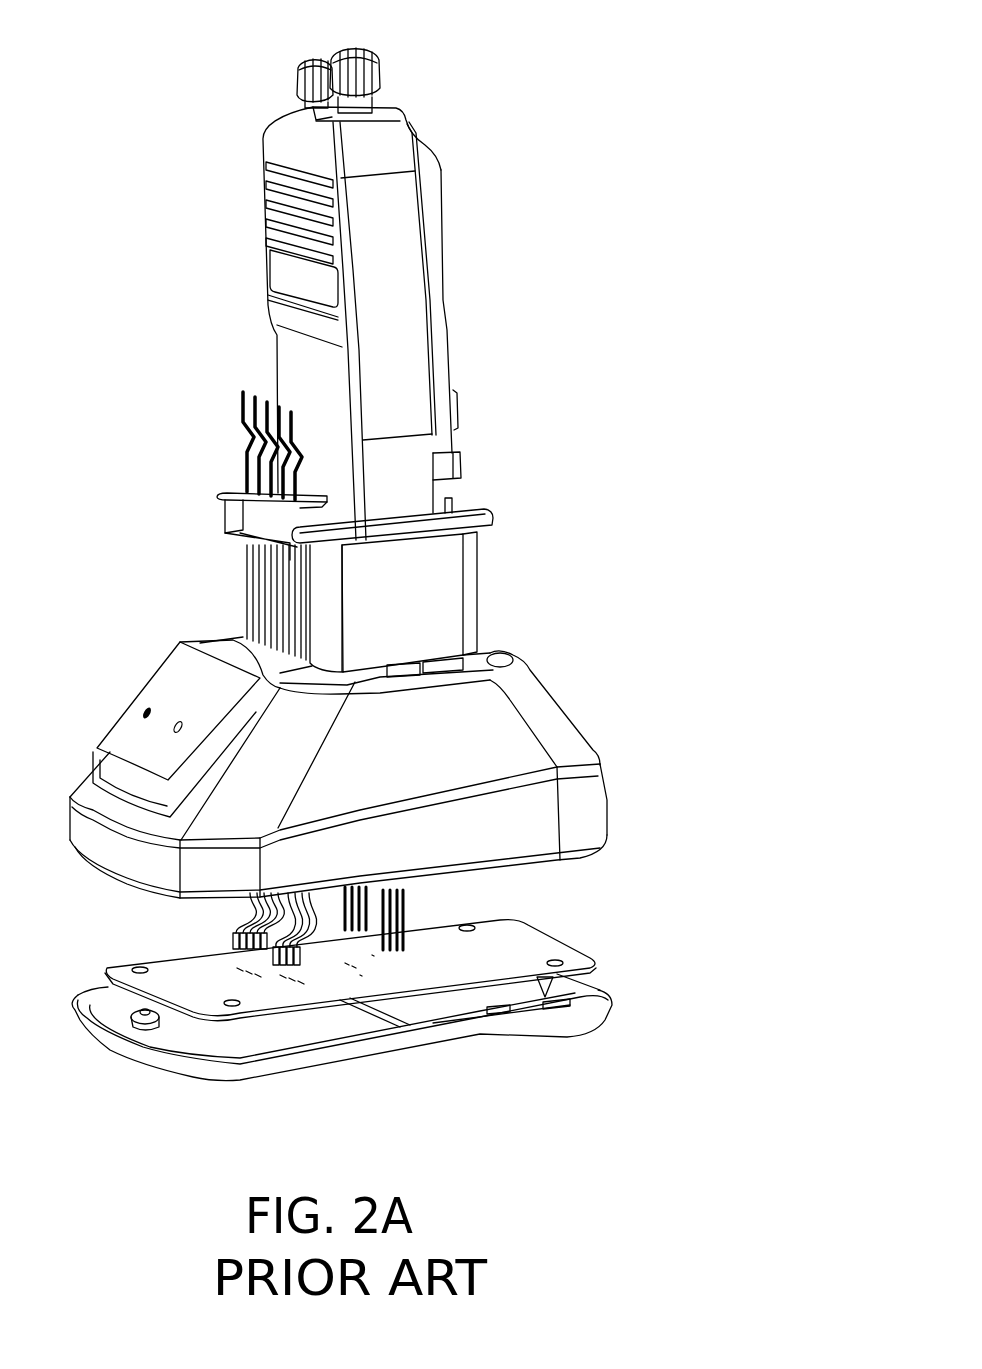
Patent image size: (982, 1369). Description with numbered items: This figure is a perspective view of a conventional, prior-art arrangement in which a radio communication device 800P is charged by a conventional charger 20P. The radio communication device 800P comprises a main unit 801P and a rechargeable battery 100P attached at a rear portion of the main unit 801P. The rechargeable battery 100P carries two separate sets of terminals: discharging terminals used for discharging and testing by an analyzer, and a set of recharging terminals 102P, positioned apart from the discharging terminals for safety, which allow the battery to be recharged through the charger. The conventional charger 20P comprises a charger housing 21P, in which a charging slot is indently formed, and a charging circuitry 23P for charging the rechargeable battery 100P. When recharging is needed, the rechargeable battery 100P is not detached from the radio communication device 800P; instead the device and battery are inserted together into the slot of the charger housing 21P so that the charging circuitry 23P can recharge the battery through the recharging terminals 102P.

The radio communication device 800P is at (438, 98).
The main unit 801P is at (397, 247).
The rechargeable battery 100P is at (437, 292).
The recharging terminals 102P is at (460, 457).
The conventional charger 20P is at (641, 766).
The charger housing 21P is at (467, 717).
The charging circuitry 23P is at (505, 957).